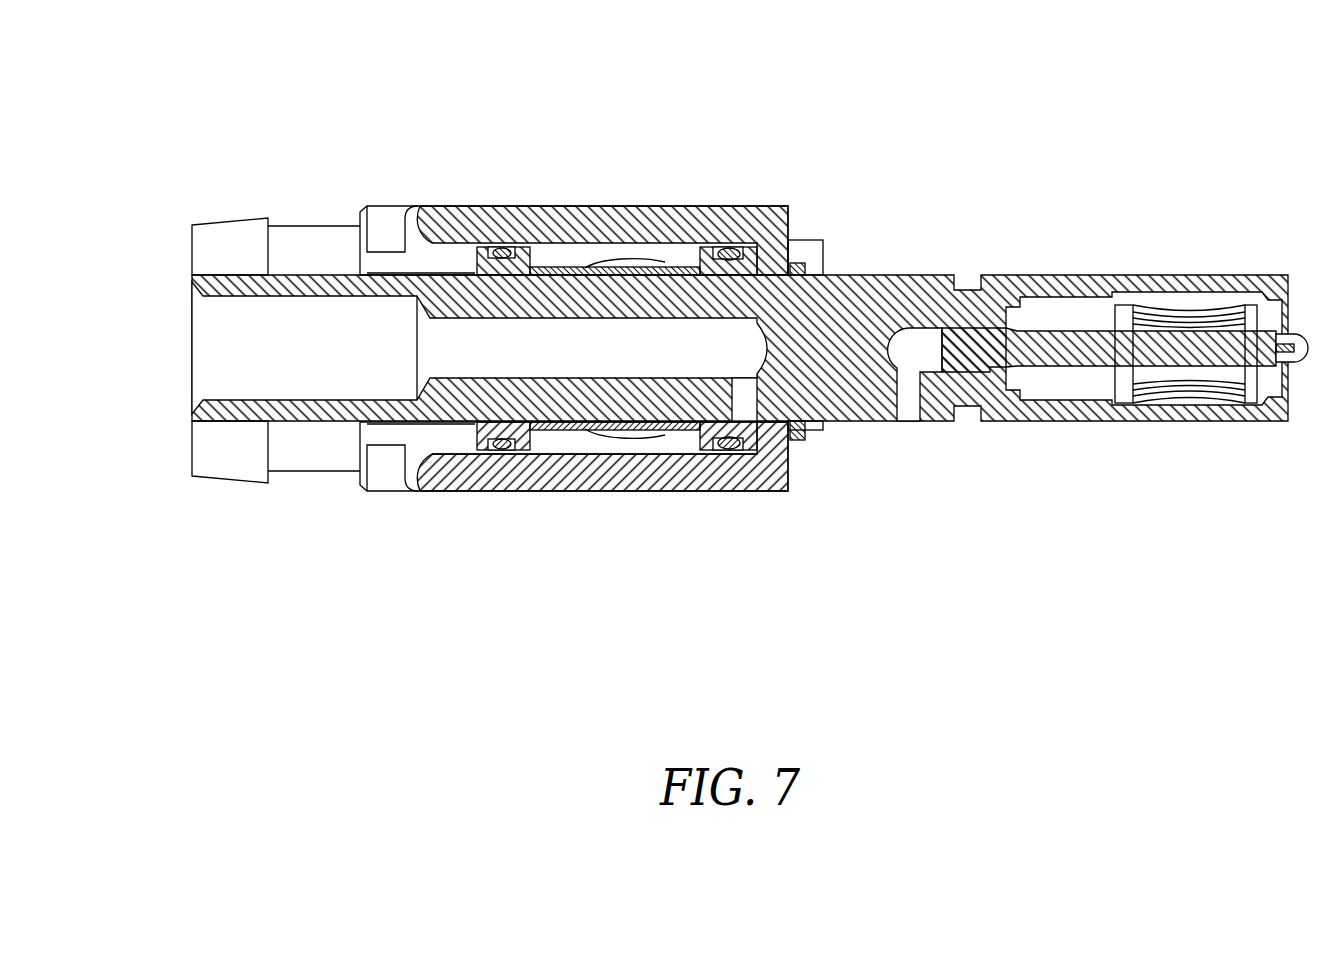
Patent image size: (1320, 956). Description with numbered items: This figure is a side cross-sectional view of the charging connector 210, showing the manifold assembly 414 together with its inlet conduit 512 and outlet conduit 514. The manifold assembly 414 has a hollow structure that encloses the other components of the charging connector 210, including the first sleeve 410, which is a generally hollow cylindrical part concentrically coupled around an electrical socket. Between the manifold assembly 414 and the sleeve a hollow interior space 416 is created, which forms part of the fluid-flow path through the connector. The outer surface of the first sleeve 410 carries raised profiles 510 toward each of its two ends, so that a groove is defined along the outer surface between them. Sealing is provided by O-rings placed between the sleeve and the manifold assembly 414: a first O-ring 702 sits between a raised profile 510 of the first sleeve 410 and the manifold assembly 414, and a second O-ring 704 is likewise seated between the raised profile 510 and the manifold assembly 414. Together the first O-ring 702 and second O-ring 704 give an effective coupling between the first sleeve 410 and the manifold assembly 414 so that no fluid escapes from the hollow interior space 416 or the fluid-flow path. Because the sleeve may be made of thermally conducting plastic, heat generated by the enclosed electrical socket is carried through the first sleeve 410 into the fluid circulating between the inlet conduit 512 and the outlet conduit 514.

The charging connector 210 is at (703, 311).
The first sleeve 410 is at (557, 268).
The manifold assembly 414 is at (478, 226).
The hollow interior space 416 is at (573, 443).
The raised profile 510 is at (446, 243).
The inlet conduit 512 is at (205, 246).
The outlet conduit 514 is at (210, 447).
The first O-ring 702 is at (500, 246).
The second O-ring 704 is at (726, 247).